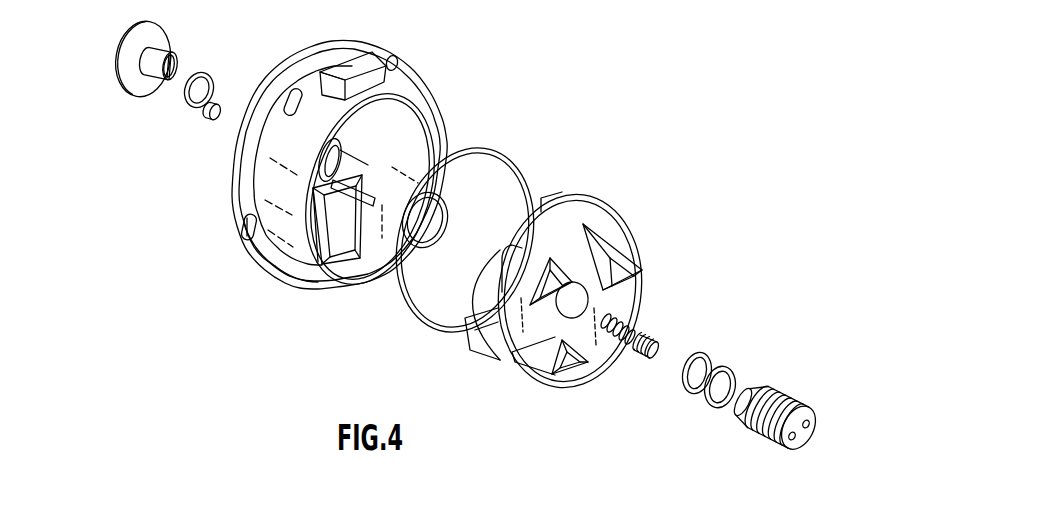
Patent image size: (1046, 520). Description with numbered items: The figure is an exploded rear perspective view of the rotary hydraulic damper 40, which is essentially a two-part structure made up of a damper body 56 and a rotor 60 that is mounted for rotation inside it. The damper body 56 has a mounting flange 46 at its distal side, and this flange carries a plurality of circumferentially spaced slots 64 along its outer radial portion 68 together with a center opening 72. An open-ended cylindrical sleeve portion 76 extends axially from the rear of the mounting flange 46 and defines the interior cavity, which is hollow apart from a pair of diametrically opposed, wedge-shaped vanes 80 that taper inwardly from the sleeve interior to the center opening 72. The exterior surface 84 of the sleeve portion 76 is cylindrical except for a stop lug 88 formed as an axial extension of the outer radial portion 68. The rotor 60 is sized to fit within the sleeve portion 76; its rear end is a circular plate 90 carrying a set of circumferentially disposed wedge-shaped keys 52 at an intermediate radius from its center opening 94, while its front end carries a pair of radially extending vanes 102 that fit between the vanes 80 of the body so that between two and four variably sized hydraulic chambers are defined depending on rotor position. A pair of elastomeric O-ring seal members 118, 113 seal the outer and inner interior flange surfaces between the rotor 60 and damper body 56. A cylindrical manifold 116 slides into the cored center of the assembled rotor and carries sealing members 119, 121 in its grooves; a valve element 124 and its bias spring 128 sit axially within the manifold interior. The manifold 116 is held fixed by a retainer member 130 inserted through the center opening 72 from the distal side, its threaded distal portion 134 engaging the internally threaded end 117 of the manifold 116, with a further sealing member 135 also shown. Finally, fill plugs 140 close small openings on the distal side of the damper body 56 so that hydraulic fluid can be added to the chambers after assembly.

The rotary hydraulic damper 40 is at (200, 343).
The mounting flange 46 is at (256, 160).
The keys 52 is at (640, 268).
The damper body 56 is at (437, 95).
The rotor 60 is at (611, 205).
The slots 64 is at (243, 227).
The outer radial portion 68 is at (270, 250).
The center opening 72 is at (348, 163).
The cylindrical sleeve portion 76 is at (304, 270).
The vanes 80 is at (372, 238).
The exterior surface 84 is at (300, 138).
The stop lug 88 is at (347, 68).
The circular plate 90 is at (546, 384).
The center opening 94 is at (578, 302).
The vanes 102 is at (495, 358).
The seal member 113 is at (450, 227).
The manifold 116 is at (777, 392).
The internally threaded end 117 is at (735, 413).
The seal member 118 is at (532, 168).
The sealing member 119 is at (731, 378).
The sealing member 121 is at (711, 362).
The valve element 124 is at (664, 362).
The bias spring 128 is at (618, 342).
The retainer member 130 is at (139, 47).
The threaded distal portion 134 is at (148, 86).
The sealing member 135 is at (204, 70).
The fill plugs 140 is at (207, 122).